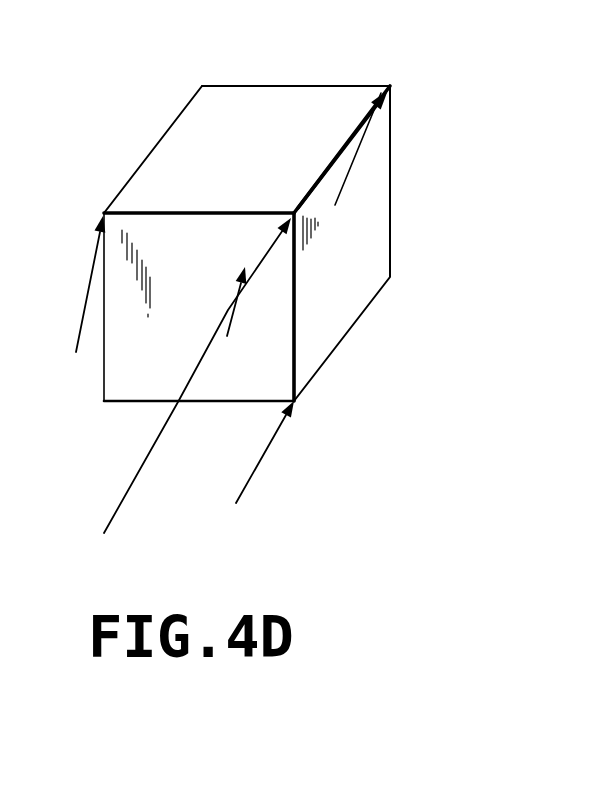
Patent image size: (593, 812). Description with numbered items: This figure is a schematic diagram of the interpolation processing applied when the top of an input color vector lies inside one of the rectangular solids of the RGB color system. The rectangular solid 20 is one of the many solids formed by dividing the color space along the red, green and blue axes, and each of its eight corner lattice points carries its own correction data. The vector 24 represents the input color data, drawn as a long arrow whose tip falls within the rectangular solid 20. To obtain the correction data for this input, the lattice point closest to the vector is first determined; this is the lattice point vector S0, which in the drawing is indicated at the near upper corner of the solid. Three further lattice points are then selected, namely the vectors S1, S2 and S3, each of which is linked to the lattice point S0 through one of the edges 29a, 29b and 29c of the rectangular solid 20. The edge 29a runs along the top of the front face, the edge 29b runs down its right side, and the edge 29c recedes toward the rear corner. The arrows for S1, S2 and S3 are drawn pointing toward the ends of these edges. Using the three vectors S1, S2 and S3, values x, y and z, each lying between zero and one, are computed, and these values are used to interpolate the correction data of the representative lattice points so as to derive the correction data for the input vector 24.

The rectangular solid 20 is at (299, 66).
The vector 24 is at (131, 493).
The edge 29a is at (176, 212).
The edge 29b is at (296, 300).
The edge 29c is at (325, 170).
The lattice point vector S0 is at (247, 300).
The lattice point vector S1 is at (80, 318).
The lattice point vector S2 is at (262, 458).
The lattice point vector S3 is at (353, 176).